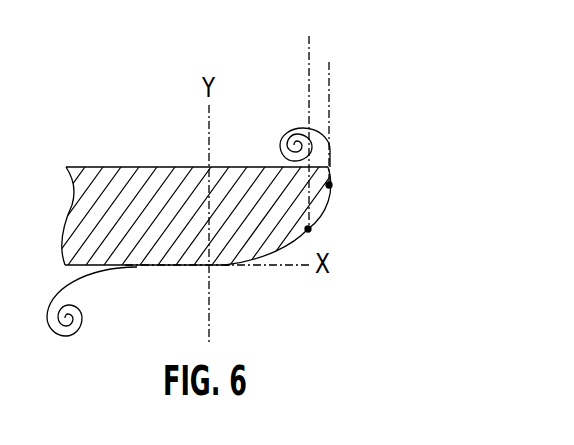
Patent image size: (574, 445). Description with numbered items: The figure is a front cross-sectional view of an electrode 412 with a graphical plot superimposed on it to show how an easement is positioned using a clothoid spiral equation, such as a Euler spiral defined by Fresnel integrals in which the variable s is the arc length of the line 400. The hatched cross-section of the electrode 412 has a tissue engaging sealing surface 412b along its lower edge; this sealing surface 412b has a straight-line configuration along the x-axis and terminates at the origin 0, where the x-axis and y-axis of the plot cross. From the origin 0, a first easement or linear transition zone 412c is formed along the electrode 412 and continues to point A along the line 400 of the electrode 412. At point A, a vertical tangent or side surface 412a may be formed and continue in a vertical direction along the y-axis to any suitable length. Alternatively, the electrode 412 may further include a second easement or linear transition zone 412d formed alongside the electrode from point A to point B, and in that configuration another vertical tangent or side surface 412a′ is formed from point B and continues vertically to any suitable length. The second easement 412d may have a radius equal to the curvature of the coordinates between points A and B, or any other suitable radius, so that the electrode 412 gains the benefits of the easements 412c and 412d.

The electrode 412 is at (168, 195).
The vertical tangent or side surface 412a is at (309, 62).
The vertical tangent or side surface 412a′ is at (330, 90).
The tissue engaging sealing surface 412b is at (173, 268).
The first easement or linear transition zone 412c is at (273, 253).
The second easement or linear transition zone 412d is at (323, 213).
The line 400 is at (309, 130).
The point B is at (329, 185).
The point A is at (308, 229).
The origin 0 is at (210, 268).